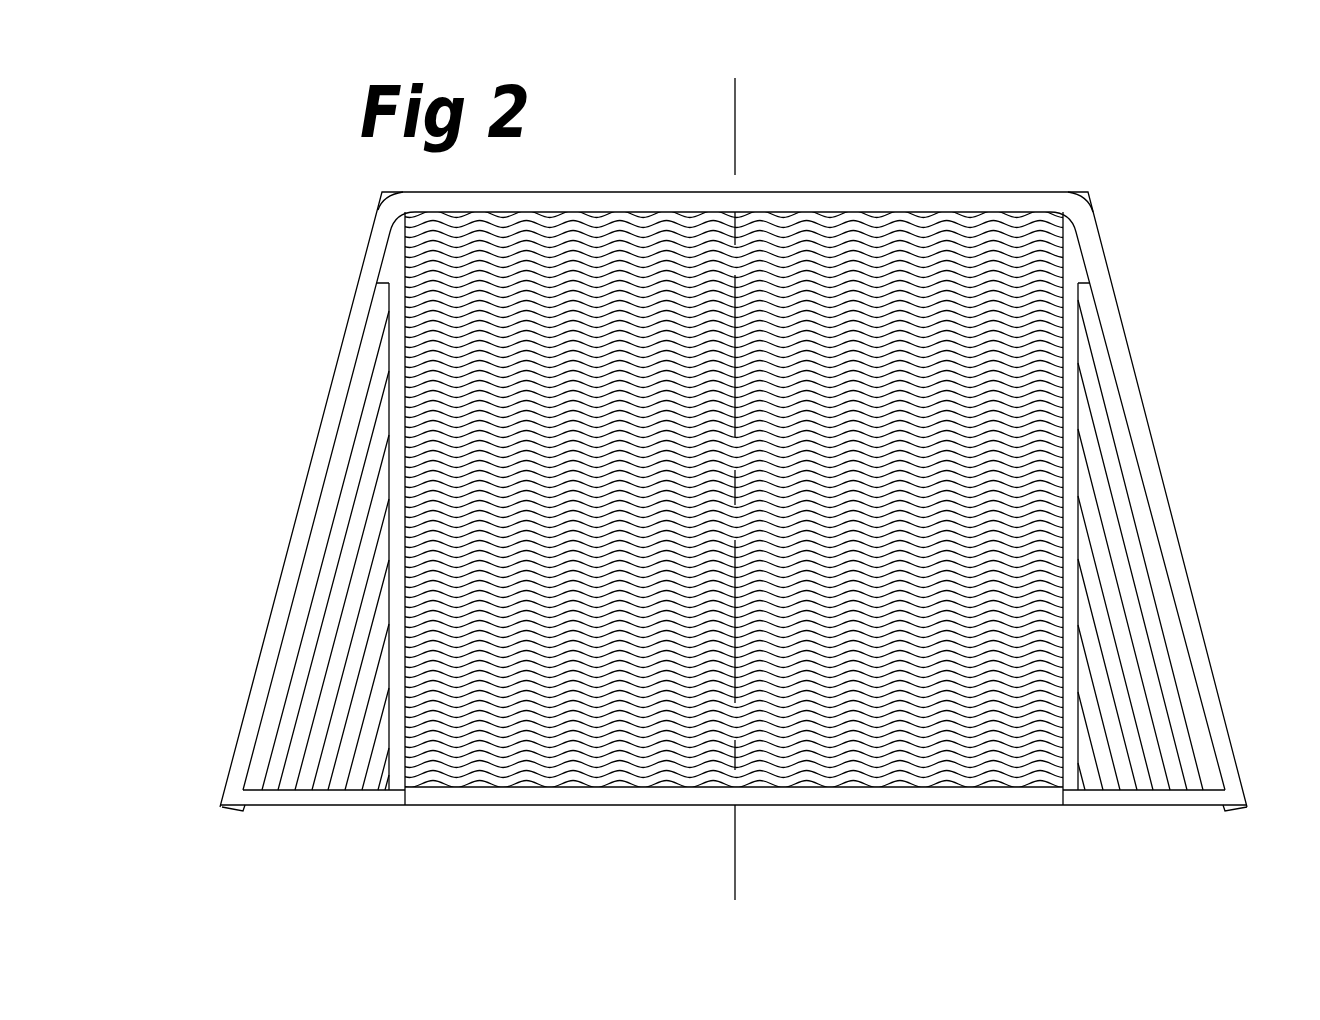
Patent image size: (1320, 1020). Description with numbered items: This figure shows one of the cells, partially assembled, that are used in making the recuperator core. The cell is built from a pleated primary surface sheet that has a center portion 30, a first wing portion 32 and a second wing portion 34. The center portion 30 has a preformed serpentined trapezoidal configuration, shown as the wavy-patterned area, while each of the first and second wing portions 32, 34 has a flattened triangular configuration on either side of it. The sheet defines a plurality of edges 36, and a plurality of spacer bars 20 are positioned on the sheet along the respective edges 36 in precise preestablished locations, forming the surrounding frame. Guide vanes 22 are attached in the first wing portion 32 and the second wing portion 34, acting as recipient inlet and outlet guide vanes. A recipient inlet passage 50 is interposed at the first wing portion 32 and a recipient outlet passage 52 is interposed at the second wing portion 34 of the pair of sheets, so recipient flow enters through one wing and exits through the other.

The spacer bar 20 is at (318, 438).
The guide vane 22 is at (348, 606).
The center portion 30 is at (848, 419).
The first wing portion 32 is at (305, 645).
The second wing portion 34 is at (1152, 645).
The edge 36 is at (1007, 192).
The recipient inlet passage 50 is at (342, 805).
The recipient outlet passage 52 is at (1128, 805).